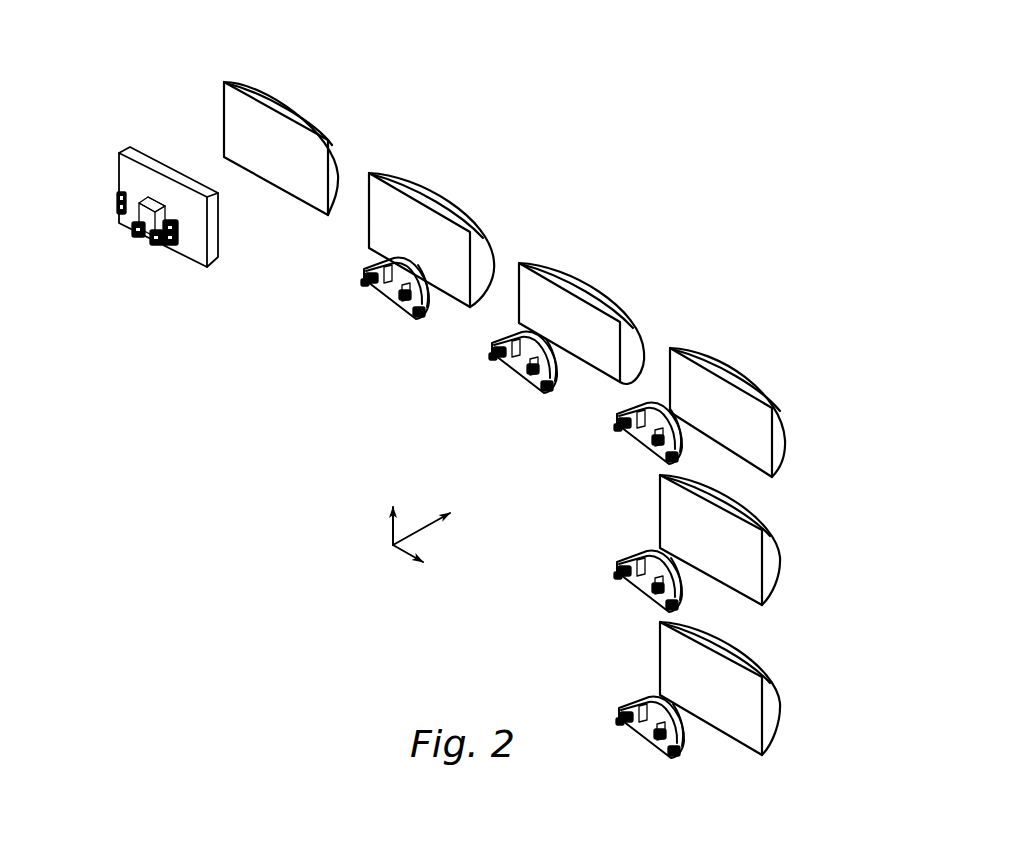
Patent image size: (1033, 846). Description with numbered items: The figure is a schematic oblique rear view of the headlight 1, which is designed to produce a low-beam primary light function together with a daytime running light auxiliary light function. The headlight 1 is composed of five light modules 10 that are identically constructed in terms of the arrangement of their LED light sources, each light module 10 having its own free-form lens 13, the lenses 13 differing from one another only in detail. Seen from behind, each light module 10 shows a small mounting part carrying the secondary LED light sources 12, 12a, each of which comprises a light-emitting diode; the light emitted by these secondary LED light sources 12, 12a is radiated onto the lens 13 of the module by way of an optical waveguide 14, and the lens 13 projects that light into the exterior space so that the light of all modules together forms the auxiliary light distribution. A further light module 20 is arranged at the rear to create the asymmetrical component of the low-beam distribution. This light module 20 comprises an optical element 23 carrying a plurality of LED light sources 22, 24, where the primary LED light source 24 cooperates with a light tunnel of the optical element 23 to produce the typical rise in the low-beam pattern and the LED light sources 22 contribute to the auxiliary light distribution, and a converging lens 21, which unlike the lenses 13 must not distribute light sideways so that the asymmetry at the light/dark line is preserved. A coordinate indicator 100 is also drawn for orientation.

The headlight 1 is at (135, 555).
The light module 10 is at (465, 180).
The secondary LED light source 12 is at (360, 285).
The secondary LED light source 12a is at (358, 272).
The free-form lens 13 is at (384, 177).
The optical waveguide 14 is at (370, 261).
The light module 20 is at (343, 93).
The lens 21 is at (240, 92).
The LED light source 22 is at (117, 205).
The optical element 23 is at (127, 170).
The LED light source 24 is at (140, 213).
The coordinate axes 100 is at (420, 533).